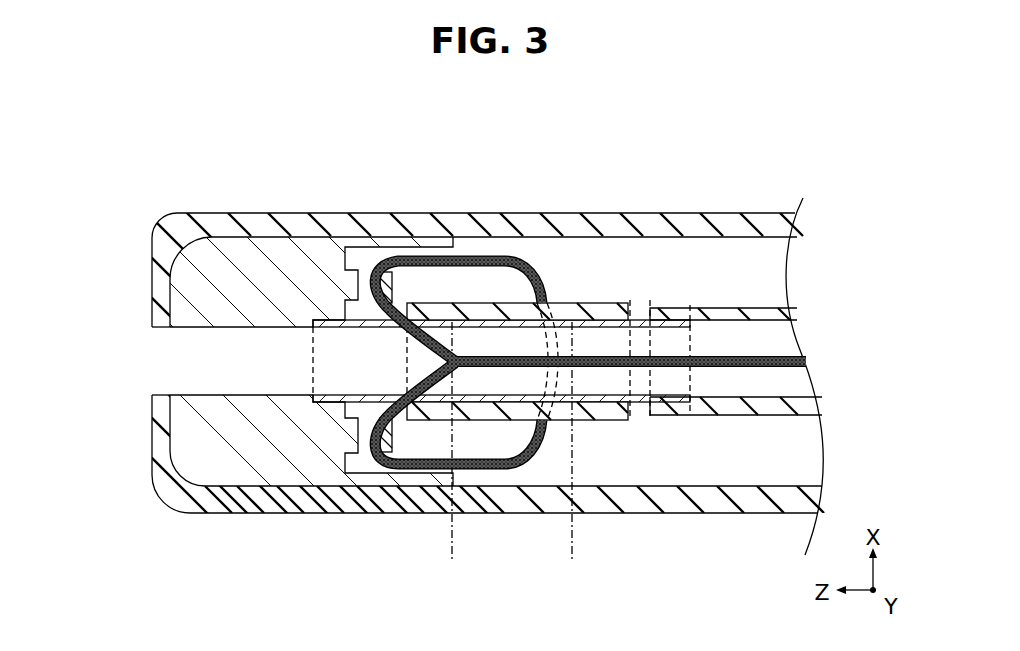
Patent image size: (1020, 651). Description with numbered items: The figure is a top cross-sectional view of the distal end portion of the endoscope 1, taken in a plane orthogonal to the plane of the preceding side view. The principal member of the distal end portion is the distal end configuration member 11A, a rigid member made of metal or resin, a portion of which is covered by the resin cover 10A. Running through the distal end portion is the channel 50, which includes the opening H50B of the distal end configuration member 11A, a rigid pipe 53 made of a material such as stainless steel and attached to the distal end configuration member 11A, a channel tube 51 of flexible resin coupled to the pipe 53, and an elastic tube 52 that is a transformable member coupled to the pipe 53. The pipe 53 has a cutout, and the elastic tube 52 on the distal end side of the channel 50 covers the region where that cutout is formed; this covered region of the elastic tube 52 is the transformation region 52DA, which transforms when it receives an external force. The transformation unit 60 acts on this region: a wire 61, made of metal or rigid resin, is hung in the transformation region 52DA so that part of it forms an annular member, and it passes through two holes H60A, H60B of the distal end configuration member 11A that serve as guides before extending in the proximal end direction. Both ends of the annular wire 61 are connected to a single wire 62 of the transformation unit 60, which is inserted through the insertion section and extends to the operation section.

The endoscope 1 is at (127, 178).
The resin cover 10A is at (728, 213).
The distal end configuration member 11A is at (358, 243).
The hole H60A is at (366, 255).
The hole H60B is at (365, 457).
The opening H50B is at (140, 357).
The channel 50 is at (567, 453).
The channel tube 51 is at (717, 417).
The elastic tube 52 is at (617, 420).
The transformation region 52DA is at (512, 448).
The pipe 53 is at (437, 403).
The transformation unit 60 is at (590, 296).
The wire 61 is at (500, 258).
The wire 62 is at (643, 356).